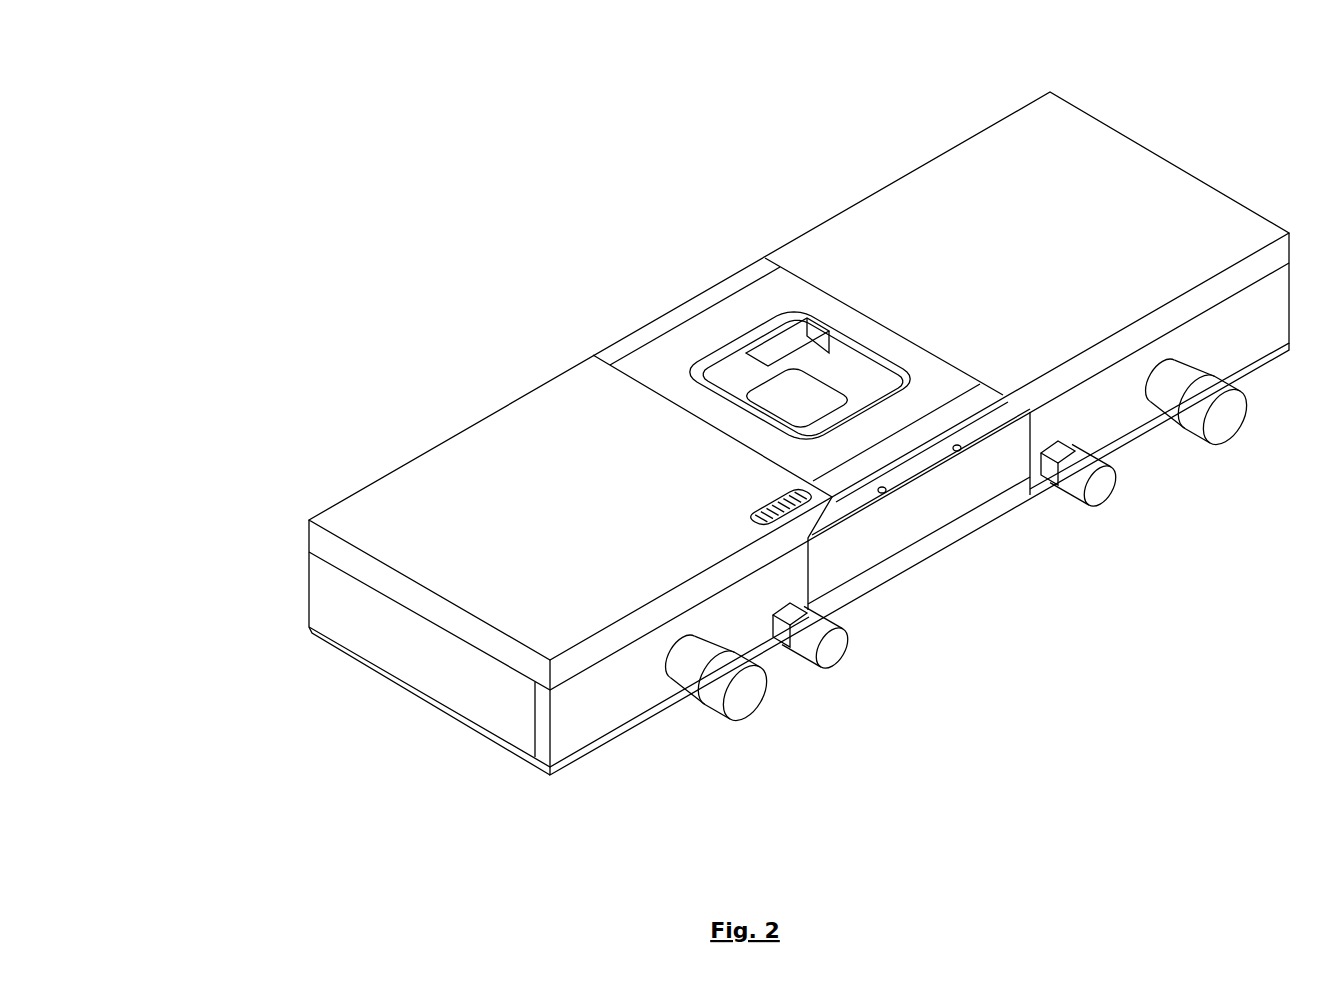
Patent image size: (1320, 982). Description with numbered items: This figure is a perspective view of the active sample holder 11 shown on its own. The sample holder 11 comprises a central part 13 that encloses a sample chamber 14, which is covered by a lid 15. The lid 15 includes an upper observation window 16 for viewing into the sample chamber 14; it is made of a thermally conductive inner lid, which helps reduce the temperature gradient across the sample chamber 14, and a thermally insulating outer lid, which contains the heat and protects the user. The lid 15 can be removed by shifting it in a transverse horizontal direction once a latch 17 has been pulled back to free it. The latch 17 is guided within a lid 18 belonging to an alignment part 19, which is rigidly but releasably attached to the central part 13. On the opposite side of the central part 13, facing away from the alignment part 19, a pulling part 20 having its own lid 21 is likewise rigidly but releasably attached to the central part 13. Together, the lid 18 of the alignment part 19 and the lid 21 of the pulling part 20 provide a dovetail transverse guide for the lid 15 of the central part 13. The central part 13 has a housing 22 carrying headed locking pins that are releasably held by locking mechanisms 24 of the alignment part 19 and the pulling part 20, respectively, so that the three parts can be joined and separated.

The sample holder 11 is at (294, 580).
The central part 13 is at (936, 555).
The sample chamber 14 is at (785, 400).
The lid 15 is at (925, 455).
The upper observation window 16 is at (765, 410).
The latch 17 is at (762, 510).
The lid 18 is at (438, 505).
The alignment part 19 is at (650, 720).
The pulling part 20 is at (1152, 434).
The lid 21 is at (965, 195).
The housing 22 is at (866, 550).
The locking mechanisms 24 is at (846, 664).